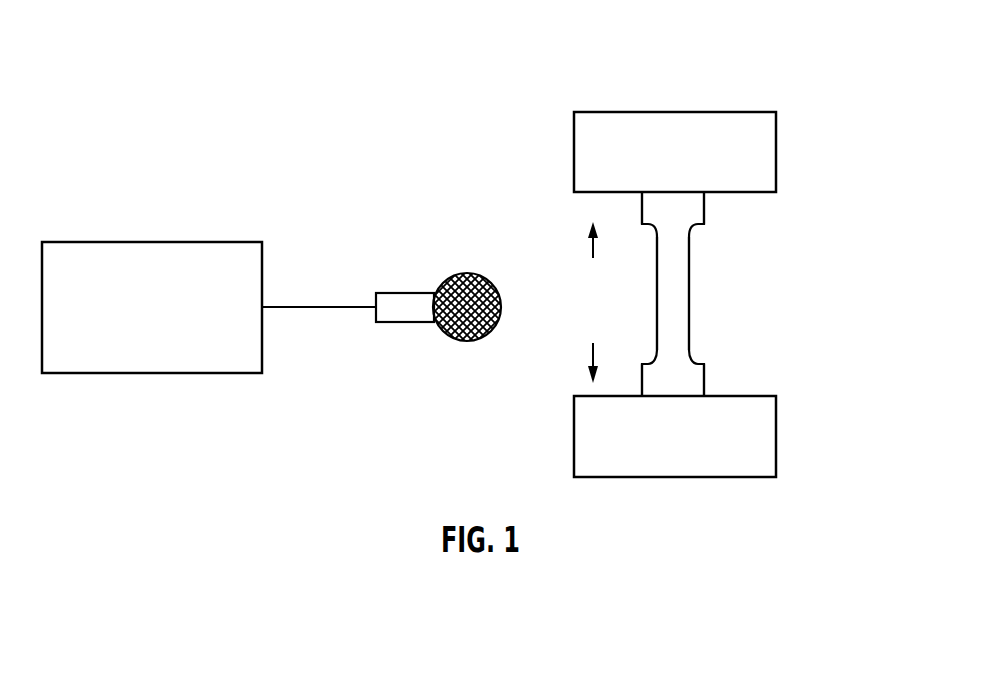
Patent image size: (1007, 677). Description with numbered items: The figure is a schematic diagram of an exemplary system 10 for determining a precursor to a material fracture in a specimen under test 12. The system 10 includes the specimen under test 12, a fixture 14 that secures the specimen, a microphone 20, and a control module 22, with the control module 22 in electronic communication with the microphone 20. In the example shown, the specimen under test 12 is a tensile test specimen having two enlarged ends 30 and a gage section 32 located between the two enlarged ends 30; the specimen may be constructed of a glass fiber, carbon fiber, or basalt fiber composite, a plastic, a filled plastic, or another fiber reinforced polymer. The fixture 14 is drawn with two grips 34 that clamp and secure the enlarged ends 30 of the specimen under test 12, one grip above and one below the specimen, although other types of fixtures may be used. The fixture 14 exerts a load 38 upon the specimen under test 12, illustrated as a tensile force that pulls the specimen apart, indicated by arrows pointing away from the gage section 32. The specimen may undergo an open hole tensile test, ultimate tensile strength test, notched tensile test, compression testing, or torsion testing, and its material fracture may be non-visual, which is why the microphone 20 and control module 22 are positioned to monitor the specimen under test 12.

The system 10 is at (788, 42).
The specimen under test 12 is at (722, 292).
The fixture 14 is at (800, 106).
The microphone 20 is at (462, 343).
The control module 22 is at (169, 321).
The enlarged ends 30 is at (692, 203).
The gage section 32 is at (670, 306).
The grips 34 is at (760, 160).
The load 38 is at (588, 245).